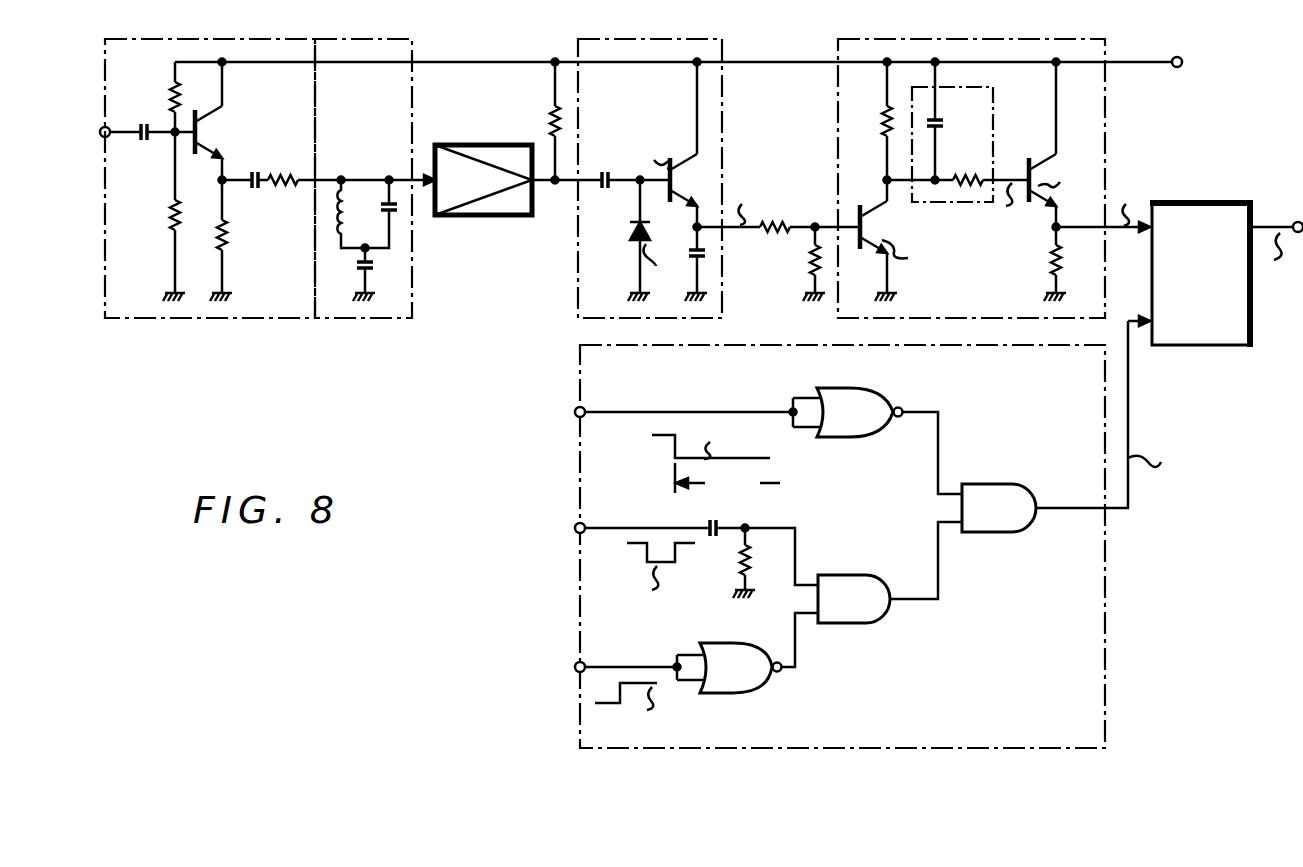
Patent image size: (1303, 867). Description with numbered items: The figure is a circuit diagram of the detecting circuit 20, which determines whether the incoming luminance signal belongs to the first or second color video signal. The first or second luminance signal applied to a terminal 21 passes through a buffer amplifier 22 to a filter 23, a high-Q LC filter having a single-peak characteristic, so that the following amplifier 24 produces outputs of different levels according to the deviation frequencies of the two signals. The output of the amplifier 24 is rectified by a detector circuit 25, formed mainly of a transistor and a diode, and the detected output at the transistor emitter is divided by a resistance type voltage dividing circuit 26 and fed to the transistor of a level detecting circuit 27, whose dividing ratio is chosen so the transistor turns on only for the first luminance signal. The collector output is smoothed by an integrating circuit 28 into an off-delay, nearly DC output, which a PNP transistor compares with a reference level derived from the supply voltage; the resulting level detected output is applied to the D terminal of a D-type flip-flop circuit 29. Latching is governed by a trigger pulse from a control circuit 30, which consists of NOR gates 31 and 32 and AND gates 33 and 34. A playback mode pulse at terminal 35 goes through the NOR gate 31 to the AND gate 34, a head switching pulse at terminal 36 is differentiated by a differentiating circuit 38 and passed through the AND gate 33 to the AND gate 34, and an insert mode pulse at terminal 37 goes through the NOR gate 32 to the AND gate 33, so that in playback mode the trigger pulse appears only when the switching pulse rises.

The detecting circuit 20 is at (580, 32).
The terminal 21 is at (104, 138).
The buffer amplifier 22 is at (214, 39).
The filter 23 is at (343, 39).
The amplifier 24 is at (481, 145).
The detector circuit 25 is at (684, 20).
The resistance type voltage dividing circuit 26 is at (786, 289).
The level detecting circuit 27 is at (1010, 39).
The integrating circuit 28 is at (993, 121).
The D-type flip-flop circuit 29 is at (1222, 203).
The control circuit 30 is at (1105, 725).
The NOR gate 31 is at (859, 366).
The NOR gate 32 is at (745, 693).
The AND gate 33 is at (860, 575).
The AND gate 34 is at (1012, 484).
The terminal 35 is at (576, 416).
The terminal 36 is at (576, 532).
The terminal 37 is at (576, 671).
The differentiating circuit 38 is at (726, 595).